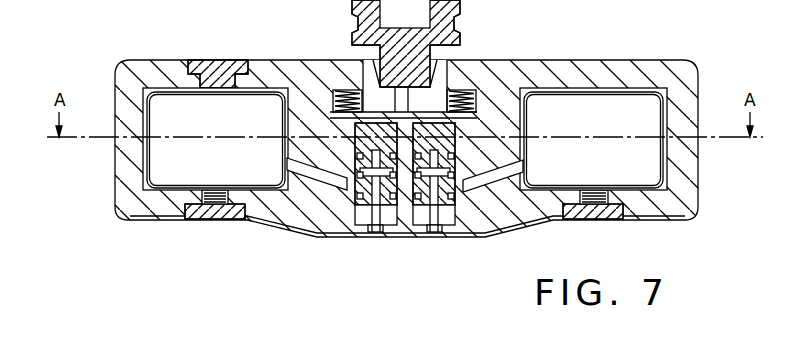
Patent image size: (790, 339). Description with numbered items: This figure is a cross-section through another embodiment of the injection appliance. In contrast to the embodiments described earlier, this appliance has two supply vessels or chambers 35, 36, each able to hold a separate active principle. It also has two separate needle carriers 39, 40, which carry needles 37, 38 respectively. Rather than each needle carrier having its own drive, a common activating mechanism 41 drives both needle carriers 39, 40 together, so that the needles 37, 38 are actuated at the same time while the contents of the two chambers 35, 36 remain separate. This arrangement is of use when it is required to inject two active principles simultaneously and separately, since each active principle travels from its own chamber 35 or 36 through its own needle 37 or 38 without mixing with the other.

The supply vessel or chamber 35 is at (178, 180).
The supply vessel or chamber 36 is at (567, 170).
The needle 37 is at (371, 218).
The needle 38 is at (441, 213).
The needle carrier 39 is at (320, 233).
The needle carrier 40 is at (423, 213).
The common activating mechanism 41 is at (418, 102).